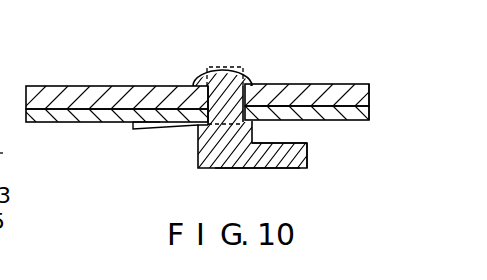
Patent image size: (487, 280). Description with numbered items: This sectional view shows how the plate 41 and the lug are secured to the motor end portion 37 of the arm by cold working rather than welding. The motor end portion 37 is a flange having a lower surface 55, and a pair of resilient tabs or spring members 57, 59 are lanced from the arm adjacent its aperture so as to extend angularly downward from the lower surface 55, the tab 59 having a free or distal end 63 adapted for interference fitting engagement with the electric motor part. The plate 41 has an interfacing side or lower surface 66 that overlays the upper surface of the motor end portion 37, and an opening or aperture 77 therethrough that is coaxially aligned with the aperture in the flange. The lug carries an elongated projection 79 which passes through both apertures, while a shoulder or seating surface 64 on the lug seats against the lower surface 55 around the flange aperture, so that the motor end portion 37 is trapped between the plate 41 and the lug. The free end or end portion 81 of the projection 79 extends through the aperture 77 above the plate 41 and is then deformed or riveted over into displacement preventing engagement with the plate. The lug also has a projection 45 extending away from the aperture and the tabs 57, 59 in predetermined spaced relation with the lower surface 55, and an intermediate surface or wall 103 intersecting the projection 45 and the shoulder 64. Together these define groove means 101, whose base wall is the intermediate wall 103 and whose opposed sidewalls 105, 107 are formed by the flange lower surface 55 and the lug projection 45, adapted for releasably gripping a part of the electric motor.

The plate 41 is at (43, 88).
The interfacing side or lower surface of plate 66 is at (54, 124).
The free or distal end of tab 63 is at (133, 129).
The tab or spring member 59 is at (142, 128).
The shoulder or seating surface 64 is at (204, 126).
The free end or end portion of projection 81 is at (206, 85).
The opening or aperture of plate 77 is at (222, 77).
The projection of lug 79 is at (240, 76).
The sidewall of groove means 105 is at (276, 107).
The tab or spring member 57 is at (368, 86).
The motor end portion 37 is at (371, 110).
The lower surface of motor end portion 55 is at (357, 121).
The groove means 101 is at (326, 139).
The projection of lug 45 is at (308, 156).
The sidewall of groove means 107 is at (253, 169).
The intermediate surface or wall 103 is at (222, 169).